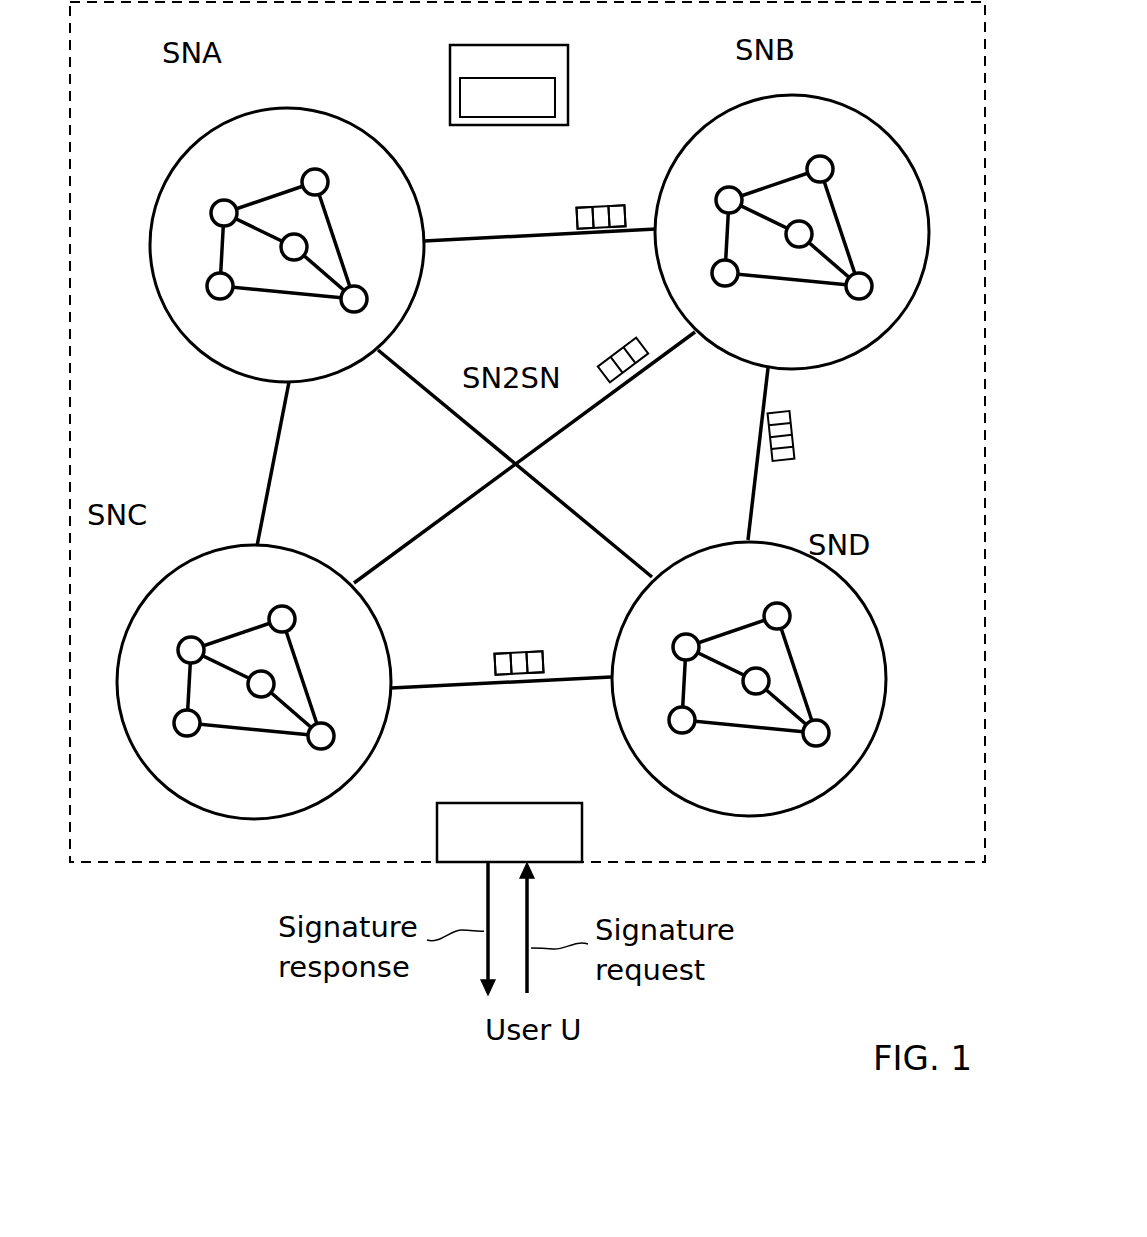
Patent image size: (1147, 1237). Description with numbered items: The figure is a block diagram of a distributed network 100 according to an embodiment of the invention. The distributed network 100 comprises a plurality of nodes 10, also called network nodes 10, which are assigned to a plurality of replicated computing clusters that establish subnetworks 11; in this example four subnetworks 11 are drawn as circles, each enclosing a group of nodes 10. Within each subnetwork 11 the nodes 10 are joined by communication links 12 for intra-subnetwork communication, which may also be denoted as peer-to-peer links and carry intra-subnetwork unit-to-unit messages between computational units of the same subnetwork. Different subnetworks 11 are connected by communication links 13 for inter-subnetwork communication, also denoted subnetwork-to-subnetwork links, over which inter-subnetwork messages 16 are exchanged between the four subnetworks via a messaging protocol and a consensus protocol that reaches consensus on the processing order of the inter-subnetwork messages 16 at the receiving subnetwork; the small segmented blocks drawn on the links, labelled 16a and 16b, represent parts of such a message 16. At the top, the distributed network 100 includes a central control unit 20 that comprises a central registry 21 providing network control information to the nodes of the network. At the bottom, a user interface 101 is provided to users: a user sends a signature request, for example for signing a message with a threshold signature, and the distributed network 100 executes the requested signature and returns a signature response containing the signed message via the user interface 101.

The node 10 is at (363, 290).
The subnetwork 11 is at (348, 122).
The communication link 12 is at (333, 229).
The communication link 13 is at (517, 232).
The inter-subnetwork message 16 is at (811, 437).
The first message part 16a is at (530, 467).
The second message part 16b is at (585, 464).
The central control unit 20 is at (568, 52).
The central registry 21 is at (553, 97).
The distributed network 100 is at (864, 1023).
The user interface 101 is at (566, 843).